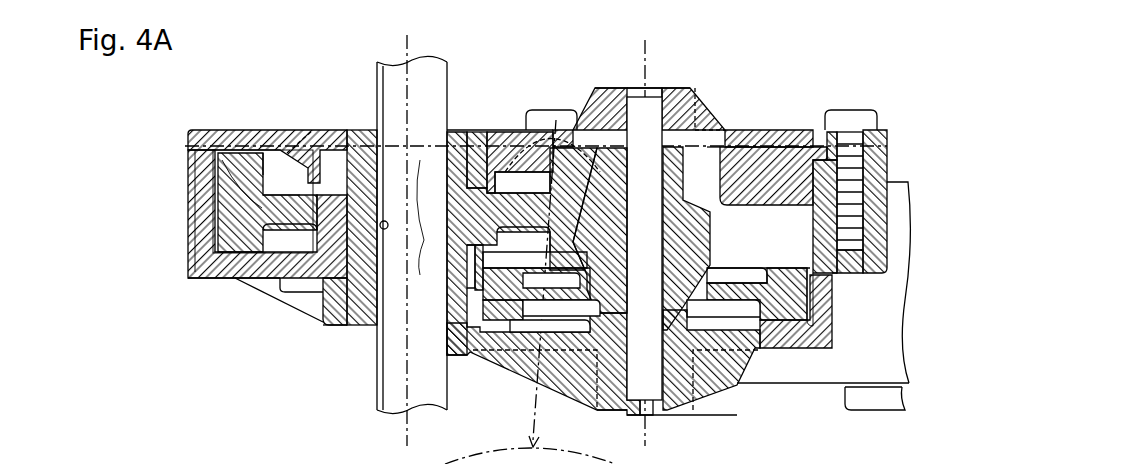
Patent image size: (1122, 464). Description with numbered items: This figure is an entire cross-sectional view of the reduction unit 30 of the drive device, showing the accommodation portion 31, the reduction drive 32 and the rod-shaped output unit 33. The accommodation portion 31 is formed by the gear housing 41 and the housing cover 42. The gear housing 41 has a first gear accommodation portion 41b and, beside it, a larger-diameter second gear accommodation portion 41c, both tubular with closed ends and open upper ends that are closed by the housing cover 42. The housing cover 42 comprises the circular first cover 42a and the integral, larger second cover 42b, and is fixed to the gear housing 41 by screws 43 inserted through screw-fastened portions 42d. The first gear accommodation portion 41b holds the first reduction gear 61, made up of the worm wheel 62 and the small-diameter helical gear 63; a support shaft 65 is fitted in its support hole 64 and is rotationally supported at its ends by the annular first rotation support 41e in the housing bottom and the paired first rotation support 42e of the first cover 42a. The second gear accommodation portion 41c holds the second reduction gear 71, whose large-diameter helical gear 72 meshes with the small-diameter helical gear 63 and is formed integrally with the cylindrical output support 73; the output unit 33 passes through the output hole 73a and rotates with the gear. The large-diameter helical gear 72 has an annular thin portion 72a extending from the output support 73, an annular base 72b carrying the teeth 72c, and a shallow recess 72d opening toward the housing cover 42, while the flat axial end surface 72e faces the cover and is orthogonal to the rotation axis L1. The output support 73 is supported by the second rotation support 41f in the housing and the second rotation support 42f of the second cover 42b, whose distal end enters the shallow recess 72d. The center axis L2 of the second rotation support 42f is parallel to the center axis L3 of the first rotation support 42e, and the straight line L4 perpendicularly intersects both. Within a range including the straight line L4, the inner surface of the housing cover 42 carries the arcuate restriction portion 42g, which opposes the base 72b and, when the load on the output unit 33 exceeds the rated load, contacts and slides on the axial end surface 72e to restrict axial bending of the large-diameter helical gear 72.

The reduction unit 30 is at (718, 112).
The accommodation portion 31 is at (214, 283).
The reduction drive 32 is at (797, 268).
The output unit 33 is at (377, 392).
The gear housing 41 is at (197, 258).
The first gear accommodation portion 41b is at (835, 338).
The second gear accommodation portion 41c is at (198, 238).
The first rotation support 41e is at (678, 417).
The second rotation support 41f is at (324, 326).
The housing cover 42 is at (208, 128).
The first cover 42a is at (790, 130).
The second cover 42b is at (218, 128).
The screw-fastened portion 42d is at (887, 132).
The first rotation support 42e is at (677, 105).
The second rotation support 42f is at (475, 130).
The restriction portion 42g is at (543, 164).
The screw 43 is at (553, 110).
The first reduction gear 61 is at (708, 252).
The worm wheel 62 is at (800, 302).
The small-diameter helical gear 63 is at (693, 222).
The support hole 64 is at (640, 160).
The support shaft 65 is at (600, 411).
The second reduction gear 71 is at (458, 357).
The large-diameter helical gear 72 is at (234, 280).
The thin portion 72a is at (327, 310).
The base 72b is at (240, 160).
The teeth 72c is at (223, 173).
The shallow recess 72d is at (262, 194).
The axial end surface 72e is at (262, 132).
The output support 73 is at (358, 130).
The output hole 73a is at (379, 225).
The rotation axis L1 is at (407, 435).
The center axis L2 is at (407, 47).
The center axis L3 is at (643, 50).
The straight line L4 is at (536, 186).